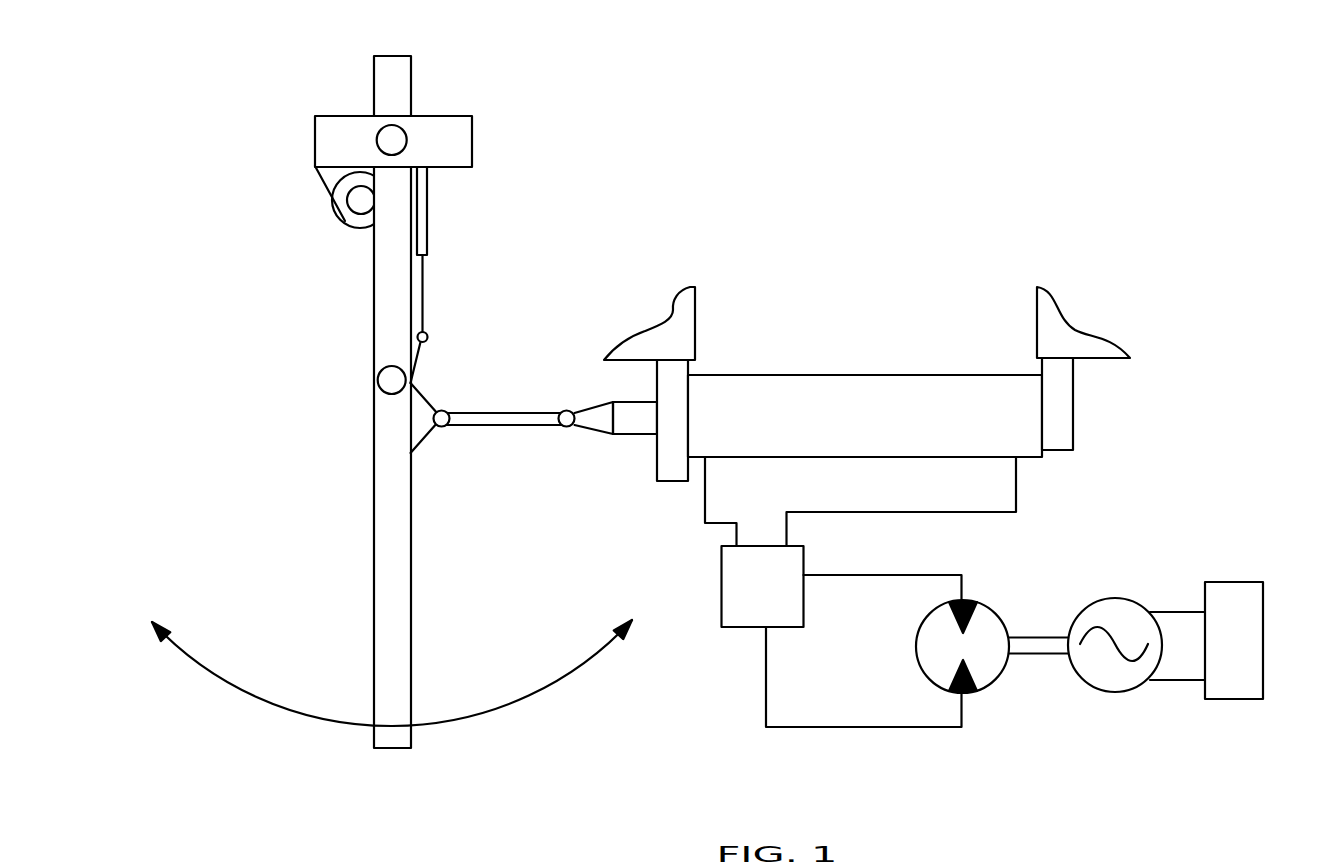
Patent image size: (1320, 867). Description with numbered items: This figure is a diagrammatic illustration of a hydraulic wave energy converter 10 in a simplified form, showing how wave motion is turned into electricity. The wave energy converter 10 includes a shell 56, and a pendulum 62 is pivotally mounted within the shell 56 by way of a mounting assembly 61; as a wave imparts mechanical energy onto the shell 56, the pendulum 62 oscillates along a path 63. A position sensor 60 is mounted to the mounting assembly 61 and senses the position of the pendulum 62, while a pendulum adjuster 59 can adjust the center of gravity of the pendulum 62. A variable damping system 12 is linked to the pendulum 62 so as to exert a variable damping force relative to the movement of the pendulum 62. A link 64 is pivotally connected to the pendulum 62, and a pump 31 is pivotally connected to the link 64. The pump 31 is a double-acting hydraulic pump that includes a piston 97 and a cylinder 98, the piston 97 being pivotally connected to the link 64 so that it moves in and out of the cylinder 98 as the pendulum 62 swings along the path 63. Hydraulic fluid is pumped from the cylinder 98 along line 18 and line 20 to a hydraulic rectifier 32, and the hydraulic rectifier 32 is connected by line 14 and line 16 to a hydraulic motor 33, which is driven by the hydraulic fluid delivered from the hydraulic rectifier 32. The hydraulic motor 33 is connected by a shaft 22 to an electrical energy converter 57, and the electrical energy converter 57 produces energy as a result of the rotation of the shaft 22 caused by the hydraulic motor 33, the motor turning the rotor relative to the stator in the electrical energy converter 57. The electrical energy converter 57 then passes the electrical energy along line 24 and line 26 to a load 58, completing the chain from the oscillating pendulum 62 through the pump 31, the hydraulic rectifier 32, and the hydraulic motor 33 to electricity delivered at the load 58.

The hydraulic wave energy converter 10 is at (1164, 278).
The variable damping system 12 is at (843, 282).
The line 14 is at (880, 573).
The line 16 is at (840, 725).
The line 18 is at (897, 512).
The line 20 is at (705, 488).
The shaft 22 is at (1027, 635).
The line 24 is at (1167, 610).
The line 26 is at (1175, 682).
The pump 31 is at (953, 375).
The hydraulic rectifier 32 is at (742, 628).
The hydraulic motor 33 is at (992, 685).
The shell 56 is at (678, 295).
The electrical energy converter 57 is at (1105, 598).
The load 58 is at (1235, 582).
The pendulum adjuster 59 is at (355, 226).
The position sensor 60 is at (428, 210).
The mounting assembly 61 is at (443, 116).
The pendulum 62 is at (374, 495).
The path 63 is at (248, 697).
The link 64 is at (502, 430).
The piston 97 is at (630, 435).
The cylinder 98 is at (783, 392).